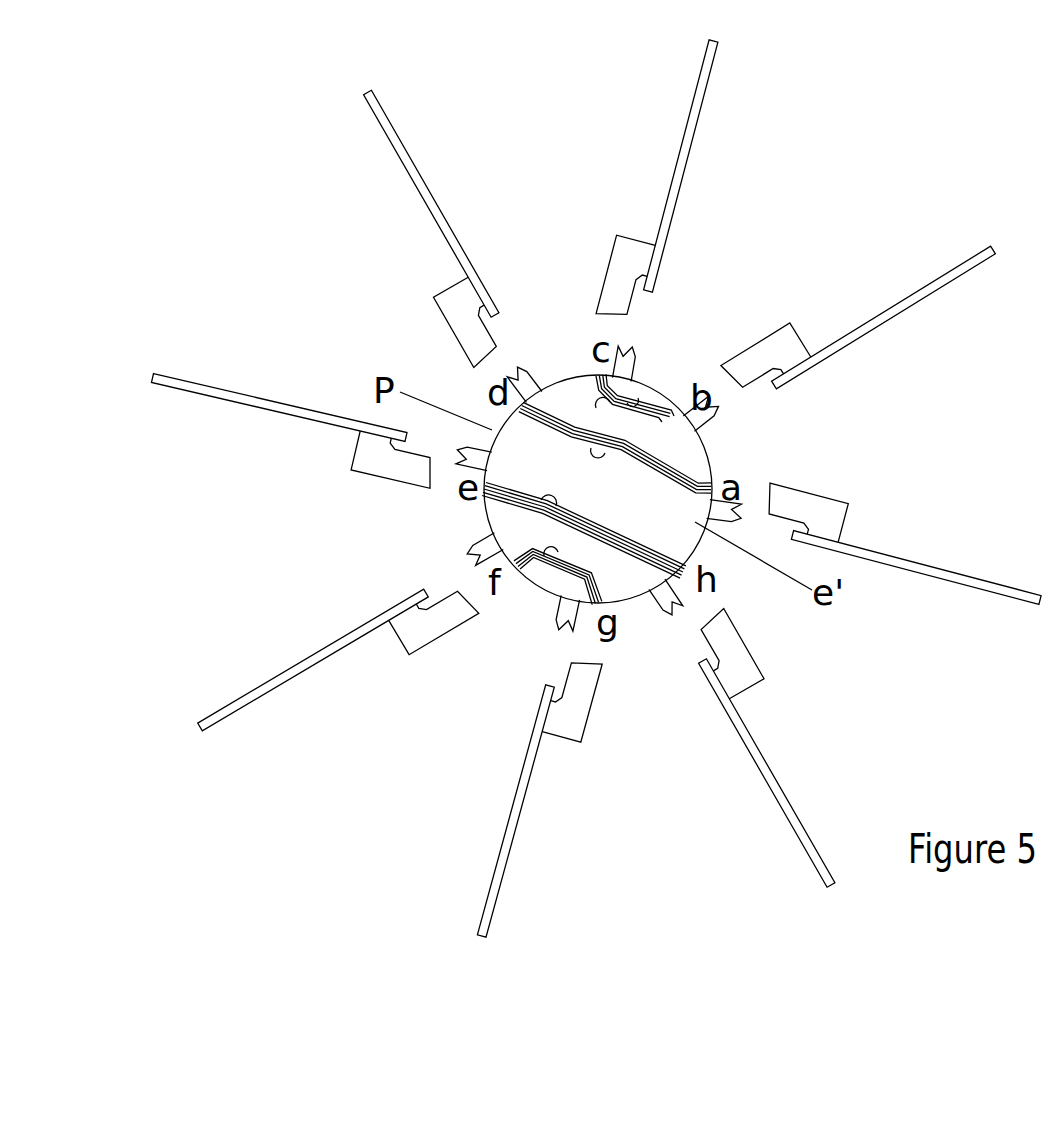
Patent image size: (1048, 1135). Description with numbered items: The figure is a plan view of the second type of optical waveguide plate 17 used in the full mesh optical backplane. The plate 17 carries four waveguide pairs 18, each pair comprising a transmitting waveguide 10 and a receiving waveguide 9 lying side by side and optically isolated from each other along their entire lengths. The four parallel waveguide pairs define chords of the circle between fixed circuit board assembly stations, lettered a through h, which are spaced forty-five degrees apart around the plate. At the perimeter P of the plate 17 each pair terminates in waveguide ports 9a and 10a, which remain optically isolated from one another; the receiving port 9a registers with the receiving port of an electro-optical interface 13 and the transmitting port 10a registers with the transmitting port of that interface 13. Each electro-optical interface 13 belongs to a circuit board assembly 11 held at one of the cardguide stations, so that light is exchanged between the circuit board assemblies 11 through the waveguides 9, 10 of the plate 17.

The receiving waveguide 9 is at (650, 403).
The transmitting waveguide 10 is at (672, 433).
The receiving port 9a is at (603, 605).
The transmitting port 10a is at (562, 629).
The circuit board assembly 11 is at (258, 403).
The electro-optical interface 13 is at (372, 467).
The waveguide plate 17 is at (683, 545).
The waveguide pairs 18 is at (530, 513).